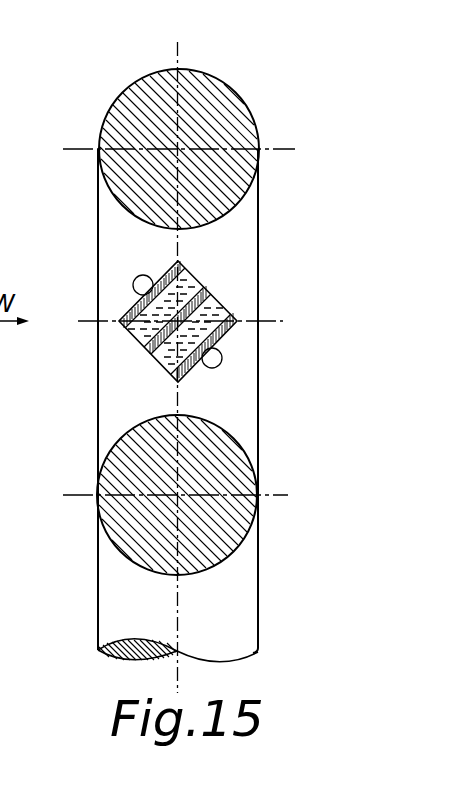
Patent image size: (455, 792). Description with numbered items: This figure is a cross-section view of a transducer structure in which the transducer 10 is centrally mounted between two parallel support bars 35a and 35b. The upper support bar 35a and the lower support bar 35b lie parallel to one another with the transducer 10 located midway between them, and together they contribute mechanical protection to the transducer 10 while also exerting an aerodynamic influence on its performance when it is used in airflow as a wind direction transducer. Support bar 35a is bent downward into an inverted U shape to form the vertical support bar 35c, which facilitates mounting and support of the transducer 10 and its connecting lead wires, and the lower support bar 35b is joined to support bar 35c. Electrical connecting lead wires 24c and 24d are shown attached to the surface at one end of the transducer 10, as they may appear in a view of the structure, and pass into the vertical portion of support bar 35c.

The transducer 10 is at (223, 290).
The electrical connecting lead wire 24c is at (138, 280).
The electrical connecting lead wire 24d is at (215, 367).
The support bar 35a is at (212, 100).
The support bar 35b is at (232, 547).
The support bar 35c is at (217, 643).